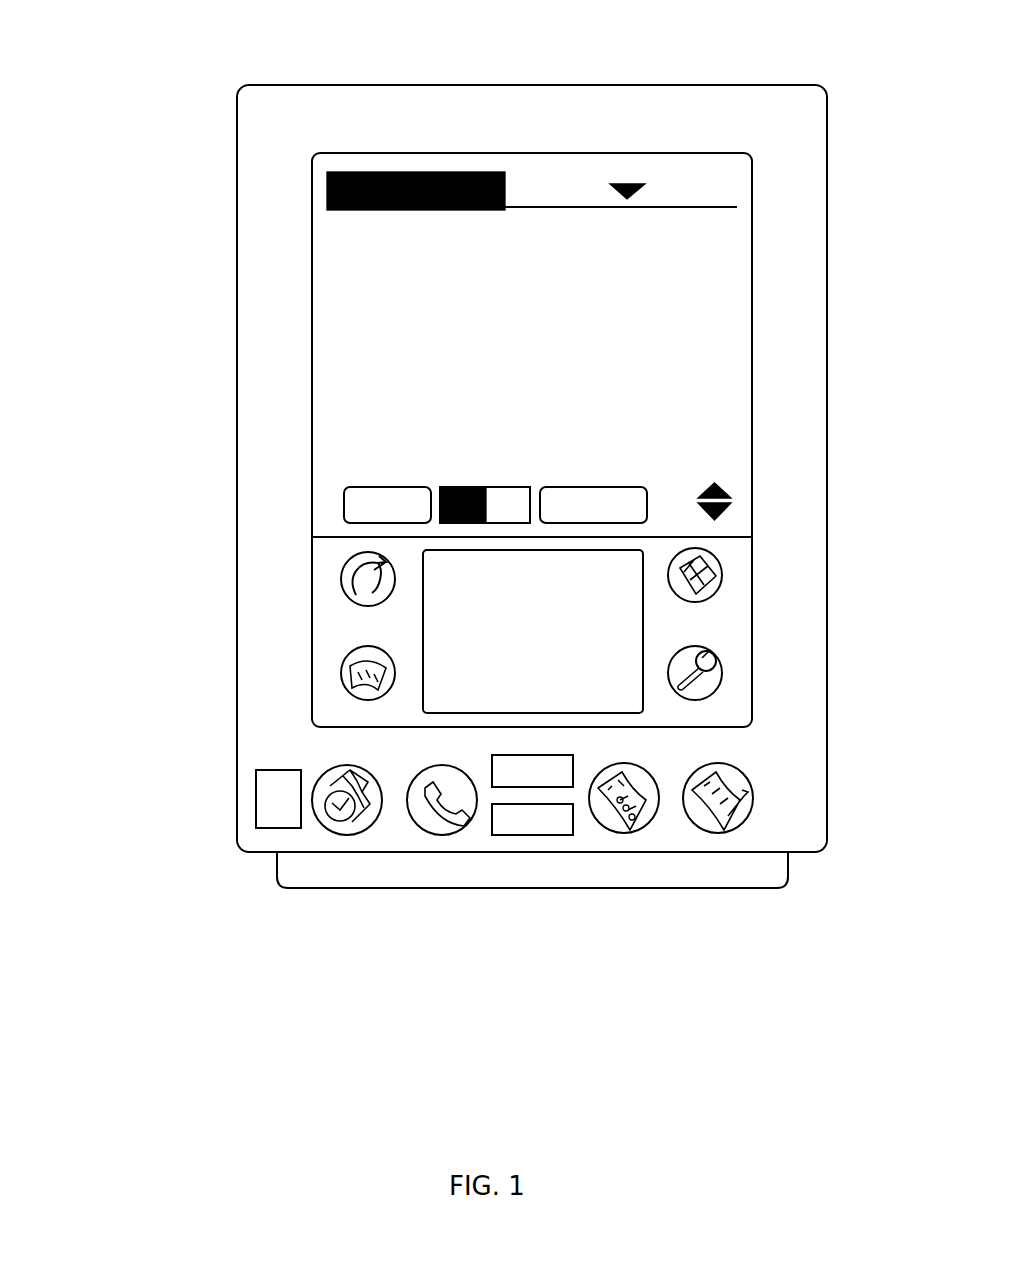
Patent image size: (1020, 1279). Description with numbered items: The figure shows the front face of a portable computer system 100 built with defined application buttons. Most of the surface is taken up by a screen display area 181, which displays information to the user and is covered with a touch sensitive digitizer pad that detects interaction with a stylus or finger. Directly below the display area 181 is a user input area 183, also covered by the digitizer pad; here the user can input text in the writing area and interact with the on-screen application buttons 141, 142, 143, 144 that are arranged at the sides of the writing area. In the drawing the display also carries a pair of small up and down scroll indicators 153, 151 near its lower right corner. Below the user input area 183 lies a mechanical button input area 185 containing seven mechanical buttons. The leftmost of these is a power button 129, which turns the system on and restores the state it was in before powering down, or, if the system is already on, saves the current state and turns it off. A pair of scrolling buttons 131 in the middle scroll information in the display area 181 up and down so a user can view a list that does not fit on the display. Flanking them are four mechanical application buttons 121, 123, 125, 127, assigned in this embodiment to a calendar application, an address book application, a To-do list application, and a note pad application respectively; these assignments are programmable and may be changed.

The portable computer system 100 is at (525, 86).
The screen display area 181 is at (137, 162).
The user input area 183 is at (133, 550).
The mechanical button input area 185 is at (130, 748).
The application button 141 is at (341, 582).
The application button 142 is at (341, 676).
The application button 143 is at (722, 568).
The application button 144 is at (722, 675).
The scroll down button 151 is at (717, 515).
The scroll up button 153 is at (717, 485).
The application button 121 is at (348, 834).
The application button 123 is at (442, 834).
The application button 125 is at (625, 832).
The application button 127 is at (719, 832).
The power button 129 is at (256, 798).
The scrolling buttons 131 is at (539, 836).